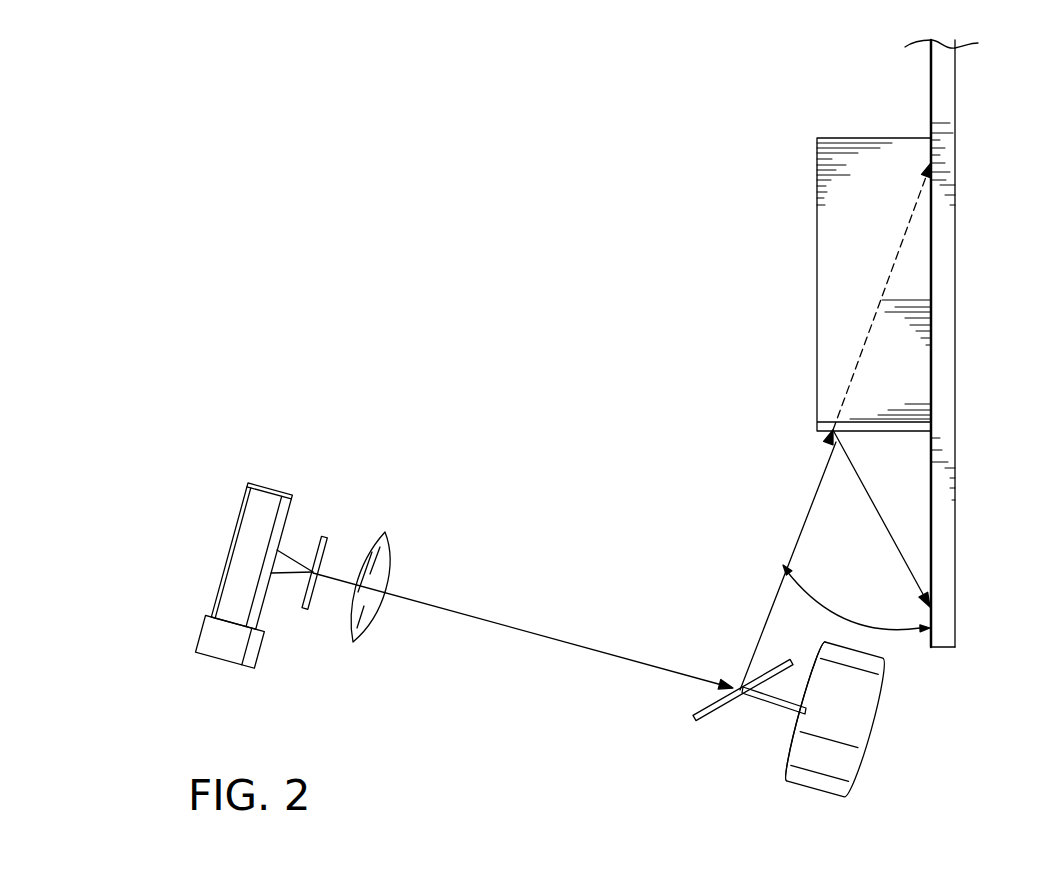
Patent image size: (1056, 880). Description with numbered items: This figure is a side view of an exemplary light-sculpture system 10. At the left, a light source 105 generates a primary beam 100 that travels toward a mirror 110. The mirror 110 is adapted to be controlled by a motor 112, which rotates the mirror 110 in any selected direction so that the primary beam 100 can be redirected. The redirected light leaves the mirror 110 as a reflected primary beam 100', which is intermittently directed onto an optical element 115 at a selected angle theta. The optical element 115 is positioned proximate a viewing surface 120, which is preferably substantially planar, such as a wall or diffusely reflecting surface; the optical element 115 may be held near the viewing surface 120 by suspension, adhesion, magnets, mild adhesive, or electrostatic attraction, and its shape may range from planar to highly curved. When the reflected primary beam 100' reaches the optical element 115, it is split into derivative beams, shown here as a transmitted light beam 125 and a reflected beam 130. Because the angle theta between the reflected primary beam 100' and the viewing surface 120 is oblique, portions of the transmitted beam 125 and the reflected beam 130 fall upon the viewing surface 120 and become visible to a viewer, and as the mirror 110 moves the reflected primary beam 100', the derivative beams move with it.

The system 10 is at (452, 248).
The primary beam 100 is at (502, 619).
The reflected primary beam 100' is at (788, 560).
The light source 105 is at (268, 495).
The mirror 110 is at (712, 702).
The motor 112 is at (865, 713).
The optical element 115 is at (817, 230).
The viewing surface 120 is at (955, 113).
The transmitted light beam 125 is at (882, 297).
The reflected beam 130 is at (873, 508).